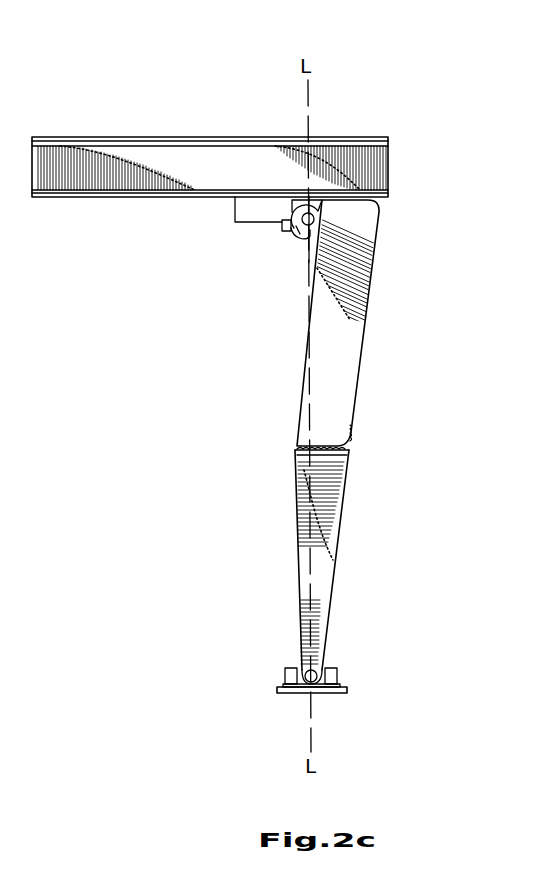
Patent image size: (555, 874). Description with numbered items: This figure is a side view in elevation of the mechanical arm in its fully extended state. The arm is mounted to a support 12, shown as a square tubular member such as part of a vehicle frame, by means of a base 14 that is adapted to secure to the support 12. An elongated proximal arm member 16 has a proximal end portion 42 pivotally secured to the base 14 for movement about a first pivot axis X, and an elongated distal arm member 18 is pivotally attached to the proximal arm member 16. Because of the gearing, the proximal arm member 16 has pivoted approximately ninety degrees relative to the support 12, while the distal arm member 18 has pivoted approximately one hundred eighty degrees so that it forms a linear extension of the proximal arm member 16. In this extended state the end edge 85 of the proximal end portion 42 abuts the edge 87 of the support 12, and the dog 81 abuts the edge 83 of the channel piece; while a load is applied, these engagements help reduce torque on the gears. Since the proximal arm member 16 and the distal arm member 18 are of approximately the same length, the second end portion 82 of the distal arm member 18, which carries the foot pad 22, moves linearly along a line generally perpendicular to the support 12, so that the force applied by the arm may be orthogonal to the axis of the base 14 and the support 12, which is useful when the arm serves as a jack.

The support 12 is at (98, 182).
The edge of support 87 is at (183, 198).
The base 14 is at (258, 212).
The first pivot axis X is at (300, 234).
The end edge of proximal arm member 85 is at (350, 199).
The proximal arm member 16 is at (352, 318).
The proximal end portion 42 is at (378, 231).
The edge of channel piece 83 is at (298, 447).
The dog 81 is at (300, 456).
The distal arm member 18 is at (332, 541).
The second end portion 82 is at (315, 626).
The foot pad 22 is at (335, 684).